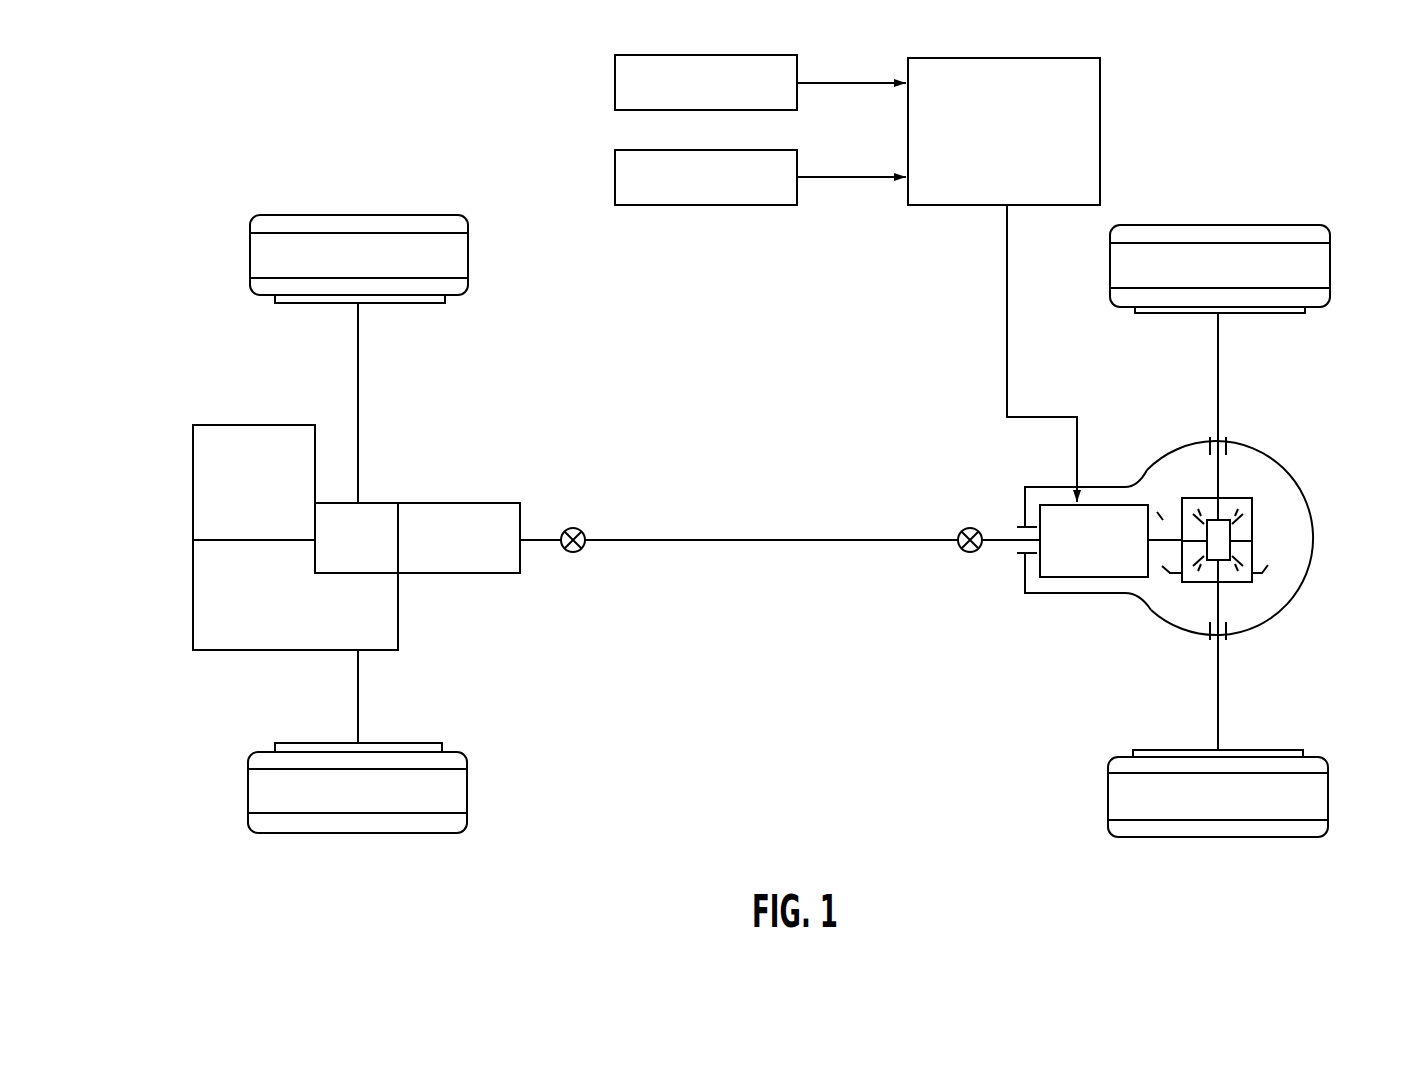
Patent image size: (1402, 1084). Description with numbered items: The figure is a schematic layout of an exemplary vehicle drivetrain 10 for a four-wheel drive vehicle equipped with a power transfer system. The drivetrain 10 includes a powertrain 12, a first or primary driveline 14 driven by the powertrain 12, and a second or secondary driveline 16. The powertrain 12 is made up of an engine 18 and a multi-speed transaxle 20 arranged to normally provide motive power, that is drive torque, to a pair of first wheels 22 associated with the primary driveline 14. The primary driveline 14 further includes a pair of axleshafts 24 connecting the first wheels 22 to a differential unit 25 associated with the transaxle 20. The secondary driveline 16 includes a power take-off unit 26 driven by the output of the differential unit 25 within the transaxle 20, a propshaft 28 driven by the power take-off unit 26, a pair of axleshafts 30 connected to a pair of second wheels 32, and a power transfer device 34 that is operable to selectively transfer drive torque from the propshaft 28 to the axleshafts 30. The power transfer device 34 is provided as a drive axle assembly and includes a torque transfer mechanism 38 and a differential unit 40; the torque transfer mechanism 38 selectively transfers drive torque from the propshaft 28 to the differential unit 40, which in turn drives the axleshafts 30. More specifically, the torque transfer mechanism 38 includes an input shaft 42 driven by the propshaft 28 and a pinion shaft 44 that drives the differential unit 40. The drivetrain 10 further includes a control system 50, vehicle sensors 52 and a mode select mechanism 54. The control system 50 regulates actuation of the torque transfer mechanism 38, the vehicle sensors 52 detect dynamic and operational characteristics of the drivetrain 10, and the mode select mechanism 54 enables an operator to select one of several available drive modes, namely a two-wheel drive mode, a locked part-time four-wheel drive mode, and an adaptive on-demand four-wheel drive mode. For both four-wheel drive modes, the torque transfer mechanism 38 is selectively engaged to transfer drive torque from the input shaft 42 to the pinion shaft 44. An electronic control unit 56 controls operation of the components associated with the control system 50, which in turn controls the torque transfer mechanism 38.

The vehicle drivetrain 10 is at (800, 652).
The powertrain 12 is at (232, 675).
The primary driveline 14 is at (428, 447).
The secondary driveline 16 is at (990, 594).
The engine 18 is at (266, 488).
The multi-speed transaxle 20 is at (301, 616).
The first wheels 22 is at (450, 253).
The axleshafts 24 is at (358, 355).
The differential unit 25 is at (369, 551).
The power take-off unit 26 is at (471, 551).
The propshaft 28 is at (722, 546).
The axleshafts 30 is at (1218, 375).
The second wheels 32 is at (1302, 260).
The power transfer device 34 is at (1141, 678).
The torque transfer mechanism 38 is at (1081, 585).
The differential unit 40 is at (1262, 528).
The input shaft 42 is at (1003, 533).
The pinion shaft 44 is at (1157, 512).
The control system 50 is at (825, 297).
The vehicle sensors 52 is at (615, 96).
The mode select mechanism 54 is at (705, 205).
The electronic control unit 56 is at (1090, 80).